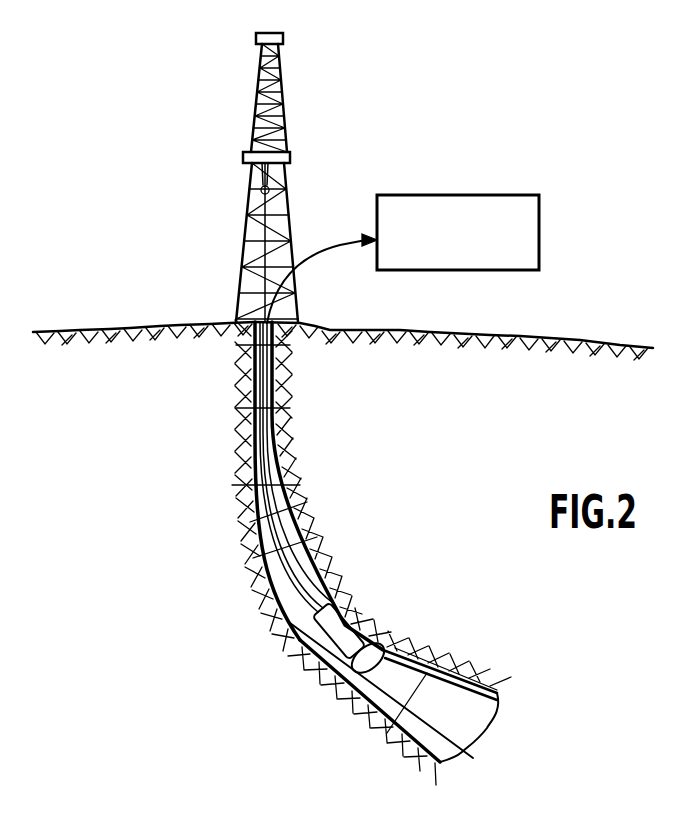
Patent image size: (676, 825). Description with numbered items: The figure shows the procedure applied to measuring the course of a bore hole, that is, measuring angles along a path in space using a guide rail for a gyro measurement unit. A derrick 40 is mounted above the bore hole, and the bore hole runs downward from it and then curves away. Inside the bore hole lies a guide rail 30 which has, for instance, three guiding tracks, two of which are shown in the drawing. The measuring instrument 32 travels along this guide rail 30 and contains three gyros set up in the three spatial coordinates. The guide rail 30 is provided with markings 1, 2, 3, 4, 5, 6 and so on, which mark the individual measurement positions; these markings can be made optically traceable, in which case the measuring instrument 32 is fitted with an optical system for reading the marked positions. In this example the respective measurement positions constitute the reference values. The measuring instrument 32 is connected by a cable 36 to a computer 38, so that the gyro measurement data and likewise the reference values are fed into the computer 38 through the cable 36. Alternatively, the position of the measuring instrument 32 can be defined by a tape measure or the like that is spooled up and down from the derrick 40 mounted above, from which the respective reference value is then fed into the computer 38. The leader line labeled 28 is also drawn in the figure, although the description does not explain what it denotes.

The derrick 40 is at (277, 69).
The computer 38 is at (448, 260).
The marking 1 is at (303, 352).
The marking 2 is at (295, 393).
The marking 3 is at (300, 477).
The marking 4 is at (318, 548).
The marking 5 is at (382, 607).
The marking 6 is at (450, 648).
The drill string 28 is at (327, 567).
The guide rail 30 is at (492, 745).
The measuring instrument 32 is at (303, 655).
The cable 36 is at (252, 520).